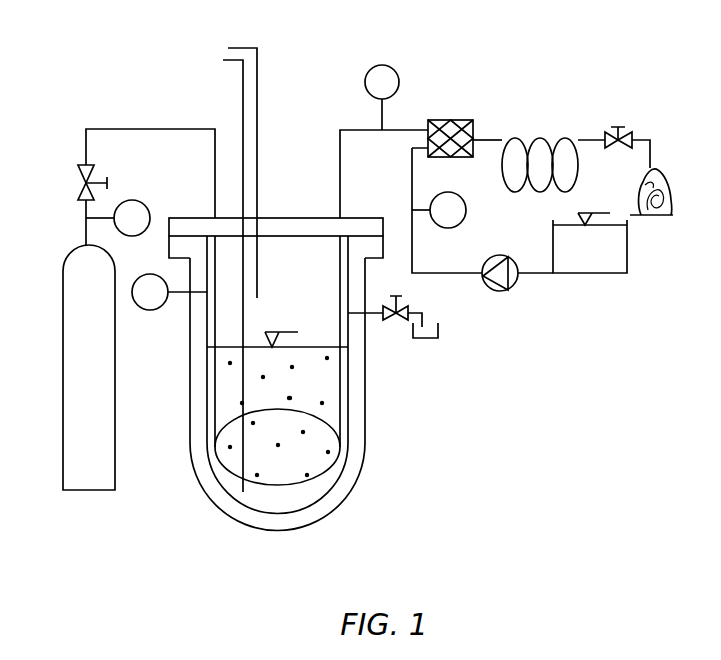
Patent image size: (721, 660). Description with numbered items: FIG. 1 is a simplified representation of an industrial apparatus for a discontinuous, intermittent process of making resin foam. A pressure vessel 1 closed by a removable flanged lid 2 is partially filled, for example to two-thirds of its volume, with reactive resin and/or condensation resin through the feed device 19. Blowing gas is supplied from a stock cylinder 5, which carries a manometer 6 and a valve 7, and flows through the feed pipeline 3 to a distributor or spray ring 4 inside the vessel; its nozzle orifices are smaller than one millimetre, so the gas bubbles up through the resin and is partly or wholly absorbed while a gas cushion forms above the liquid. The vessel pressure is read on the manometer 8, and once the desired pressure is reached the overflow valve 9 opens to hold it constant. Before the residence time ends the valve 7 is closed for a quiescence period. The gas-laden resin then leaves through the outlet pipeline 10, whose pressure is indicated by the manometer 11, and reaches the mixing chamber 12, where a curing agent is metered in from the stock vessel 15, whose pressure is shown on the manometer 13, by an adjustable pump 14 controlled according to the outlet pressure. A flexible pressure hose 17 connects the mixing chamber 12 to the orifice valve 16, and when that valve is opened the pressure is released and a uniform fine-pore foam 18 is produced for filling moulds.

The pressure vessel 1 is at (327, 508).
The removable flanged lid 2 is at (318, 228).
The feed pipeline 3 is at (185, 129).
The distributor (spray ring) 4 is at (322, 462).
The stock cylinder 5 is at (103, 452).
The manometer 6 is at (132, 204).
The valve 7 is at (84, 165).
The manometer 8 is at (147, 297).
The overflow valve 9 is at (388, 318).
The gas line 10 is at (340, 162).
The manometer 11 is at (377, 82).
The mixing chamber 12 is at (450, 138).
The manometer 13 is at (450, 215).
The adjustable pump 14 is at (510, 278).
The stock vessel 15 is at (605, 262).
The orifice valve 16 is at (612, 132).
The flexible pressure hose 17 is at (540, 158).
The fine-pore foam 18 is at (658, 172).
The feed device 19 is at (240, 259).